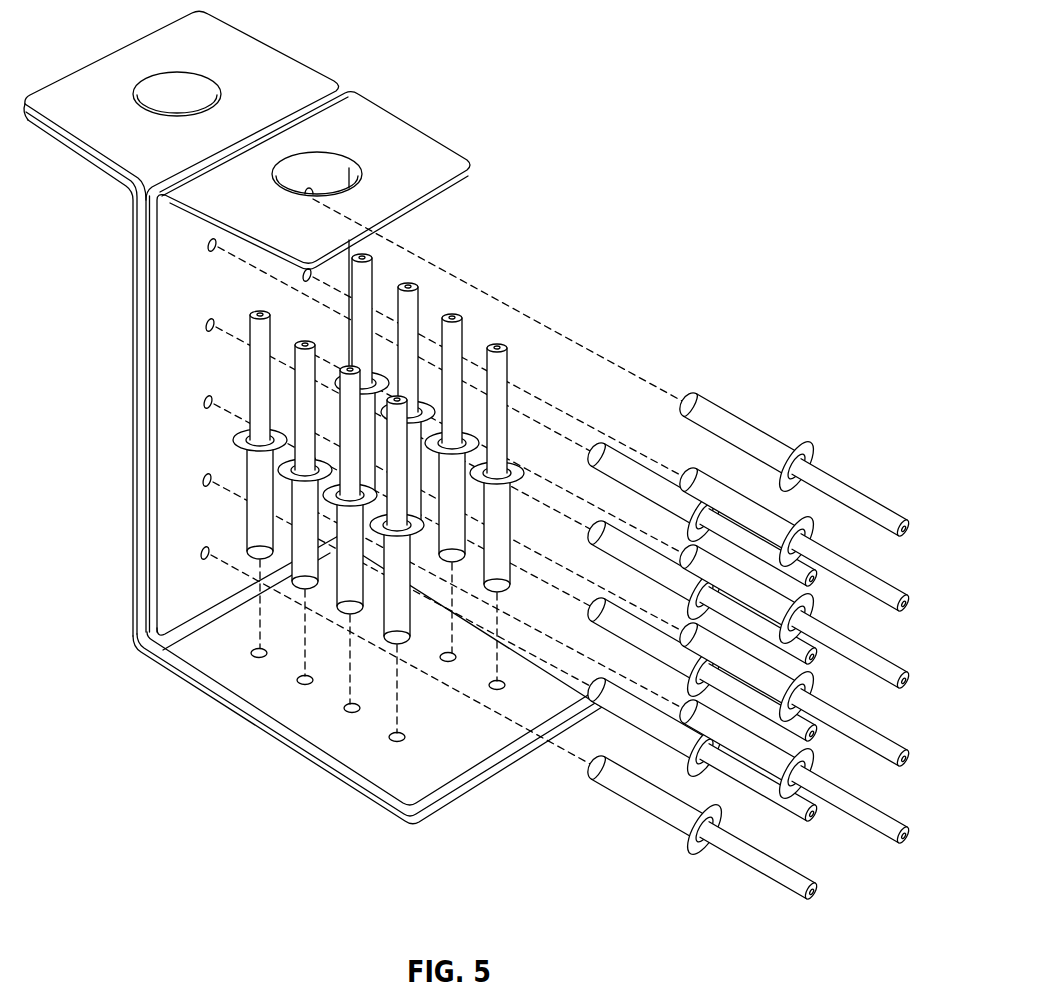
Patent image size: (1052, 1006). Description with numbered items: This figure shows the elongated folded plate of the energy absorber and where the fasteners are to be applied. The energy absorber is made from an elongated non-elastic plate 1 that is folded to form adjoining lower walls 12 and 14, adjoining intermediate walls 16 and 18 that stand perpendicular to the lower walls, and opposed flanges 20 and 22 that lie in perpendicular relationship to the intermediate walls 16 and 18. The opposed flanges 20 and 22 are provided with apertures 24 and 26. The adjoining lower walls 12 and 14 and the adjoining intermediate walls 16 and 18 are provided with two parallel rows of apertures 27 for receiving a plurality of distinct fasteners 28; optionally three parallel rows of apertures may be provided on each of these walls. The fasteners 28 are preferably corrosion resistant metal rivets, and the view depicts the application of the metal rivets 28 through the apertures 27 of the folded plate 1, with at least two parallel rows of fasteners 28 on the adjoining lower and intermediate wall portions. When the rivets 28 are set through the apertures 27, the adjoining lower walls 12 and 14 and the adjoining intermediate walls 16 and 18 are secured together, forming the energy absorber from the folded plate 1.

The elongated non-elastic plate 1 is at (512, 760).
The lower wall 12 is at (400, 794).
The lower wall 14 is at (258, 738).
The intermediate wall 16 is at (164, 463).
The intermediate wall 18 is at (132, 382).
The opposed flange 20 is at (454, 160).
The opposed flange 22 is at (296, 65).
The aperture 24 is at (330, 174).
The aperture 26 is at (177, 90).
The apertures 27 is at (198, 553).
The fasteners 28 is at (733, 421).